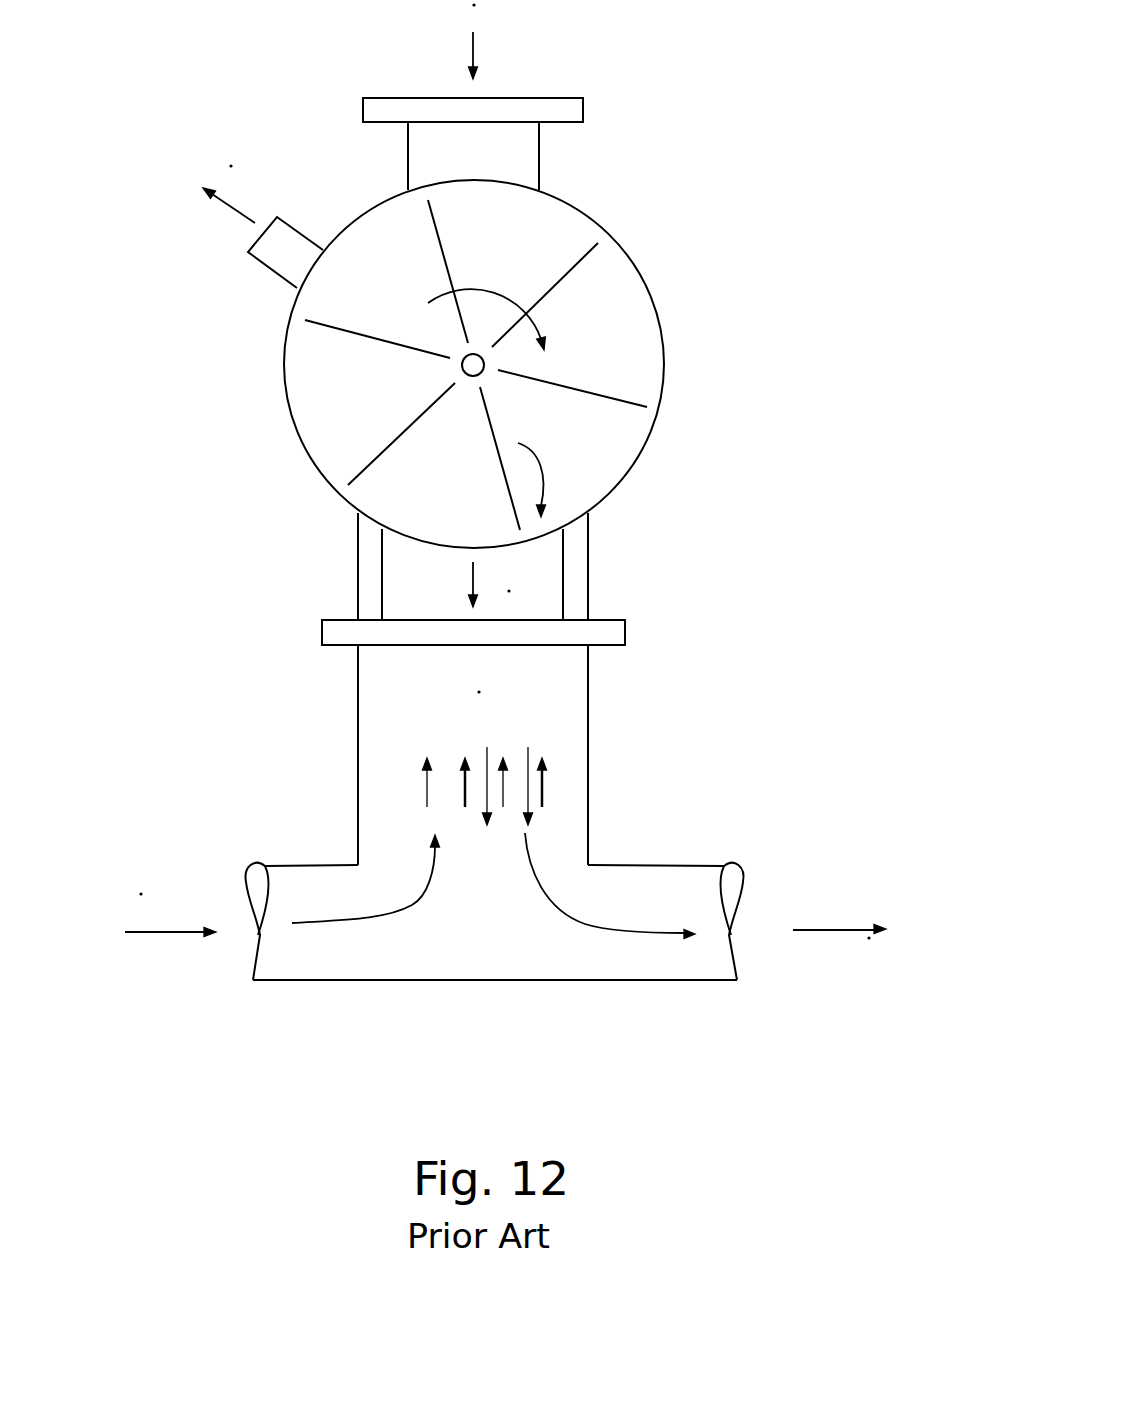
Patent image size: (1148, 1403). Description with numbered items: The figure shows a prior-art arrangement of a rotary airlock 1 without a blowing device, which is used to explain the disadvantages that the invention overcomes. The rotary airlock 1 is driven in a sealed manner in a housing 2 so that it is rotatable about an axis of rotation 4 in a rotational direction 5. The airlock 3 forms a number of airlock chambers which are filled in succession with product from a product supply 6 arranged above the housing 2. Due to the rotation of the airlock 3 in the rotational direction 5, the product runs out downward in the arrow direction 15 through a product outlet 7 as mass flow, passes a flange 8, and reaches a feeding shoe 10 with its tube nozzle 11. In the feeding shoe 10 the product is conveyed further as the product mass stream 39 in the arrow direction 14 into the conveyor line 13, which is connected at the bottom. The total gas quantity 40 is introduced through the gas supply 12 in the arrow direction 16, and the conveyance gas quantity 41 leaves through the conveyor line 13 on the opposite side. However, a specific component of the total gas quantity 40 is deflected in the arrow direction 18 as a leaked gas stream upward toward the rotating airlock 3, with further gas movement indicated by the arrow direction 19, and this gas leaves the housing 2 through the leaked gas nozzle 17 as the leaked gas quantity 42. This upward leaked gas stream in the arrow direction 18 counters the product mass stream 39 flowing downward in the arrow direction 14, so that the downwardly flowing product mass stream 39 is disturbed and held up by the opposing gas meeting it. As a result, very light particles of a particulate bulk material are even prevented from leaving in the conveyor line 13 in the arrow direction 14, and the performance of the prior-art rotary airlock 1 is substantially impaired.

The rotary airlock 1 is at (762, 328).
The housing 2 is at (643, 272).
The airlock 3 is at (356, 472).
The axis of rotation 4 is at (487, 365).
The rotational direction 5 is at (498, 300).
The product supply 6 is at (513, 133).
The product outlet 7 is at (574, 575).
The flange 8 is at (613, 632).
The feeding shoe 10 is at (666, 707).
The tube nozzle 11 is at (590, 743).
The gas supply 12 is at (287, 960).
The conveyor line 13 is at (683, 890).
The arrow direction 14 is at (603, 920).
The arrow direction 15 is at (472, 52).
The arrow direction 16 is at (162, 935).
The leaked gas nozzle 17 is at (285, 263).
The arrow direction 18 is at (397, 918).
The arrow direction 19 is at (427, 787).
The product mass stream 39 is at (487, 783).
The total gas quantity 40 is at (170, 914).
The conveyance gas quantity 41 is at (833, 932).
The leaked gas quantity 42 is at (227, 207).